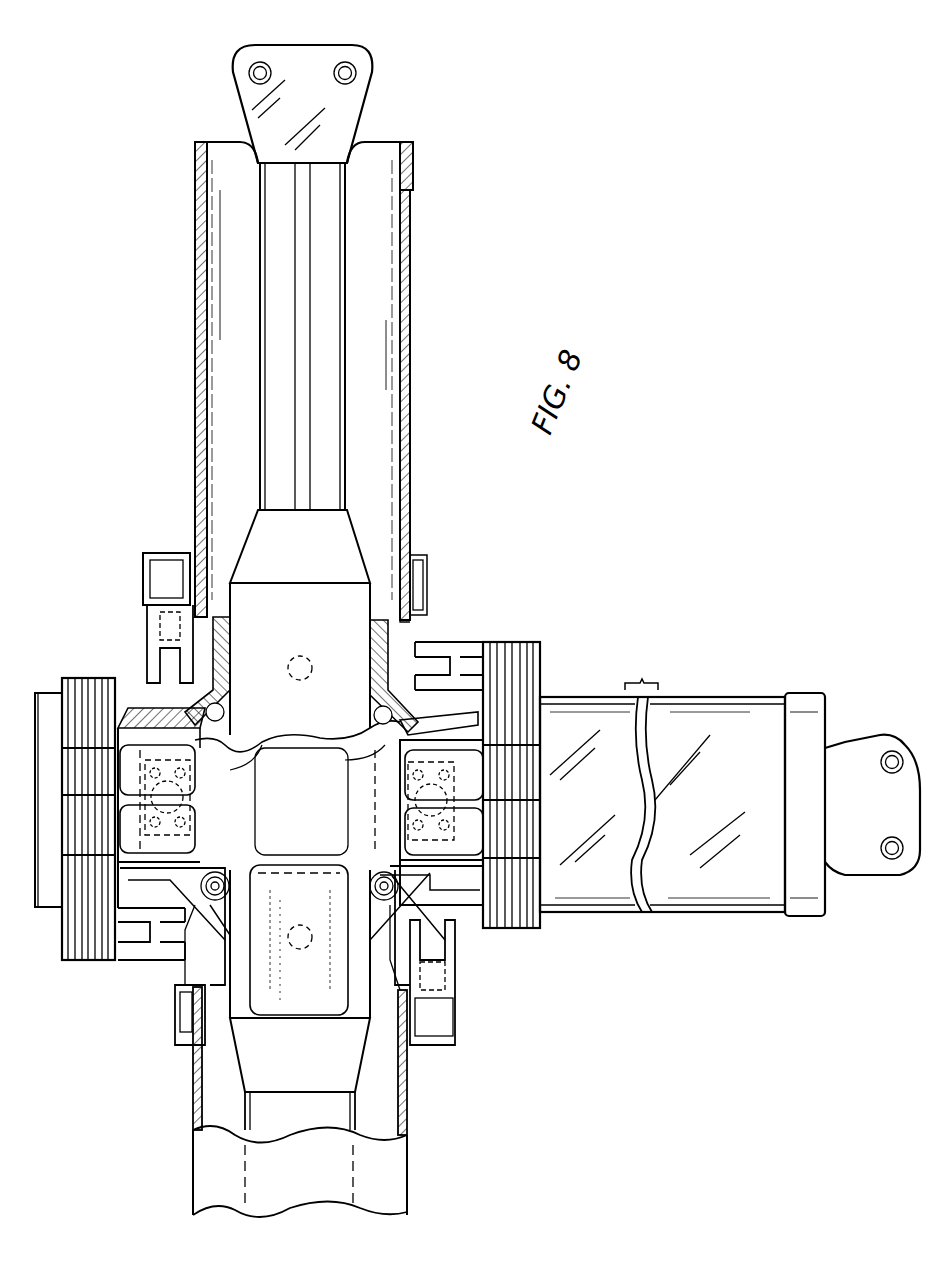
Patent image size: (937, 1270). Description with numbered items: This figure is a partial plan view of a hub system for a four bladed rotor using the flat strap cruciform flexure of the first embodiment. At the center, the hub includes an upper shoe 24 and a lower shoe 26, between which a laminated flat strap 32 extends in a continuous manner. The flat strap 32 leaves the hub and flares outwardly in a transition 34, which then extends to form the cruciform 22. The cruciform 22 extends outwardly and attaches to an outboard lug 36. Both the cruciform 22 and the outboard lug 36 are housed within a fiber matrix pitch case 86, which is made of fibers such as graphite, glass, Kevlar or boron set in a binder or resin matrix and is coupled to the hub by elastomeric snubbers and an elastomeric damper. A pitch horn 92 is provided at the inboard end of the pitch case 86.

The flat strap cruciform flexure 22 is at (250, 352).
The upper shoe 24 is at (395, 860).
The lower shoe 26 is at (152, 722).
The laminated flat strap 32 is at (265, 628).
The transition 34 is at (268, 552).
The outboard lug 36 is at (256, 70).
The fiber matrix pitch case 86 is at (197, 182).
The pitch horn 92 is at (152, 625).